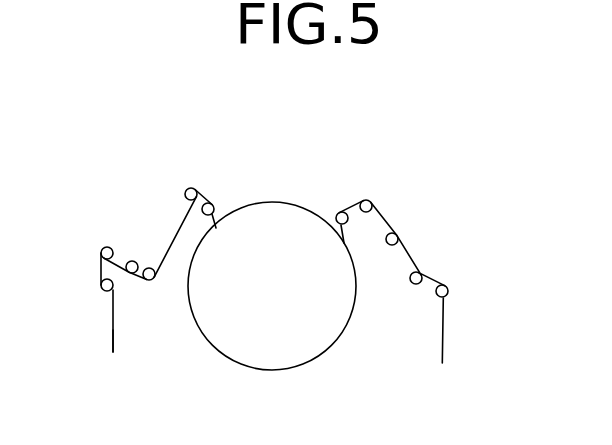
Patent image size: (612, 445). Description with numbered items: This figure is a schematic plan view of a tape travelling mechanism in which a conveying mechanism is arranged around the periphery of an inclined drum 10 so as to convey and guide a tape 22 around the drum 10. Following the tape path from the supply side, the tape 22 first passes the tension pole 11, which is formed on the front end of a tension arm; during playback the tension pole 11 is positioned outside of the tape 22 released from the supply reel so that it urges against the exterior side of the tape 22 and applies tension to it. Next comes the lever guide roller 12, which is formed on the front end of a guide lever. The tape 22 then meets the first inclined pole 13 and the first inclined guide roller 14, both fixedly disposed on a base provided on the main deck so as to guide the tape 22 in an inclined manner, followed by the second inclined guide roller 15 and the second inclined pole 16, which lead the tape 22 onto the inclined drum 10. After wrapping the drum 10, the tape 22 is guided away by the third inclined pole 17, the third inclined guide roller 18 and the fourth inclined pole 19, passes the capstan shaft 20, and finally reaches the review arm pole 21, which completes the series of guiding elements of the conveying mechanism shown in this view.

The inclined drum 10 is at (277, 296).
The tension pole 11 is at (101, 291).
The lever guide roller 12 is at (101, 251).
The first inclined pole 13 is at (130, 261).
The first inclined guide roller 14 is at (150, 268).
The second inclined guide roller 15 is at (192, 188).
The second inclined pole 16 is at (213, 204).
The third inclined pole 17 is at (337, 212).
The third inclined guide roller 18 is at (371, 202).
The fourth inclined pole 19 is at (398, 238).
The capstan shaft 20 is at (421, 275).
The review arm pole 21 is at (438, 297).
The tape 22 is at (113, 330).